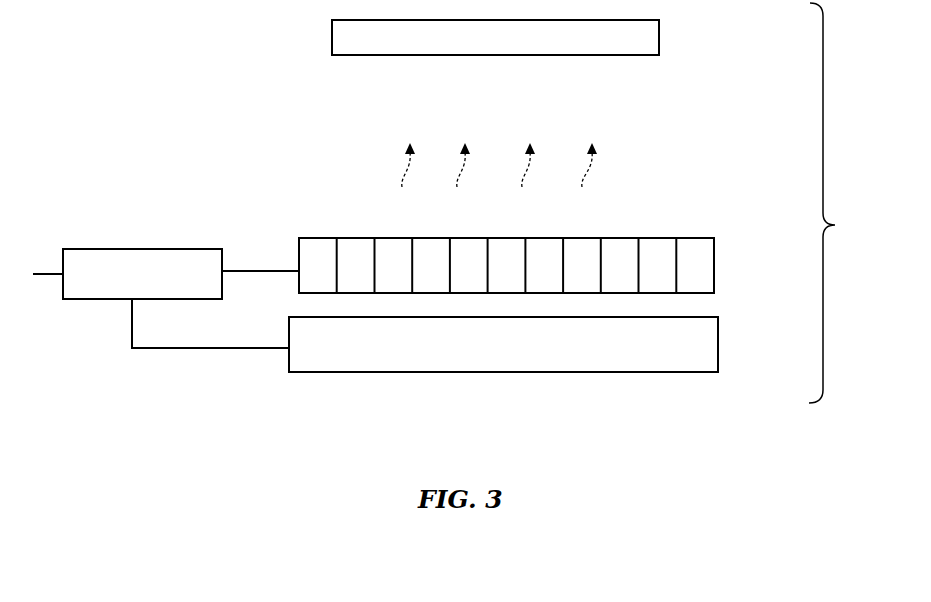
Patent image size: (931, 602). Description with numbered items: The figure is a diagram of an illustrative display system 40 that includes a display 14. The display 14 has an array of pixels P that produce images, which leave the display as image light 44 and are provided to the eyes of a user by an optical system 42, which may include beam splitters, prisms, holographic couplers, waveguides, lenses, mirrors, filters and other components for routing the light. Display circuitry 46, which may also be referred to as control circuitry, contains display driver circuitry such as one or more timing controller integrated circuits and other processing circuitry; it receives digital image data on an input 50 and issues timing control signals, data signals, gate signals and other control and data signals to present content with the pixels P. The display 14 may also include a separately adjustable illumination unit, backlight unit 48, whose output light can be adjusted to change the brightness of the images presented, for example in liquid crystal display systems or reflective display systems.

The display 14 is at (538, 302).
The display system 40 is at (850, 203).
The optical system 42 is at (659, 37).
The image light 44 is at (586, 167).
The display circuitry 46 is at (145, 263).
The backlight unit 48 is at (349, 362).
The input 50 is at (33, 274).
The pixels P is at (392, 246).